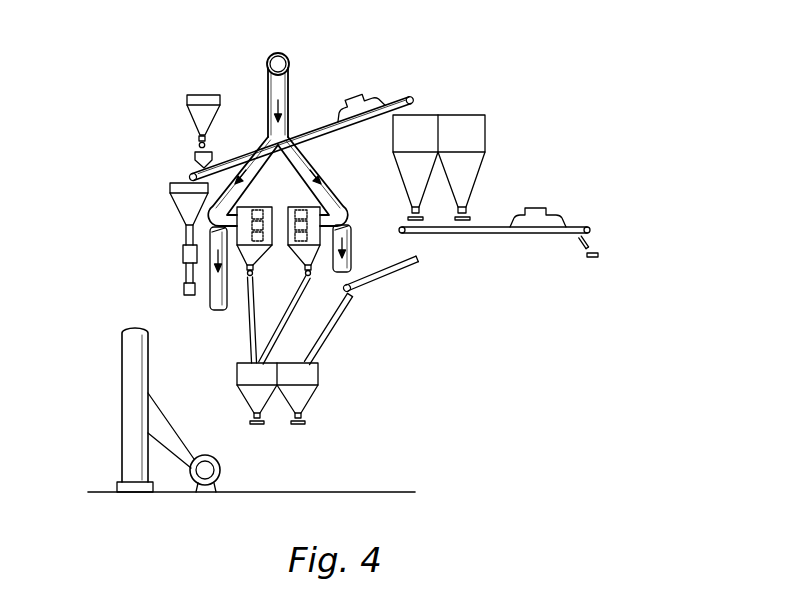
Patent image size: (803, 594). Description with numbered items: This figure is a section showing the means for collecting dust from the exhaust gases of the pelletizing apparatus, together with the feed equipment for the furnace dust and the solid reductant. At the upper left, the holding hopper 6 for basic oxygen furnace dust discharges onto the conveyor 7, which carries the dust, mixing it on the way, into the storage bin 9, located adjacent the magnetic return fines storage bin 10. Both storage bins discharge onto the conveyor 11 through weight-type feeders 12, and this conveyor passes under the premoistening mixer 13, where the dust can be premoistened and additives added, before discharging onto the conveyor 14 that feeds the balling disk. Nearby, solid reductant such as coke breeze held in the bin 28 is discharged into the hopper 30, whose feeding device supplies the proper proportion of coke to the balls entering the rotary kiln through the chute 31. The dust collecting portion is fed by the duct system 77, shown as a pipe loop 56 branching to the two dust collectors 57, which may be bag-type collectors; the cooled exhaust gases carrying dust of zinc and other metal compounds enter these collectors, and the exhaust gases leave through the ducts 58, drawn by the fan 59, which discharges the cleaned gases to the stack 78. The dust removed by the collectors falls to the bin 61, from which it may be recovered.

The holding hopper 6 is at (190, 114).
The conveyor 7 is at (299, 130).
The storage bin 9 is at (400, 139).
The return fines storage bin 10 is at (481, 131).
The conveyor 11 is at (487, 225).
The weight-type feeders 12 is at (457, 213).
The premoistening mixer 13 is at (553, 221).
The conveyor 14 is at (592, 259).
The bin 28 is at (181, 203).
The hopper 30 is at (183, 254).
The chute 31 is at (184, 290).
The pipe loop 56 is at (289, 80).
The dust collectors 57 is at (299, 208).
The ducts 58 is at (216, 309).
The fan 59 is at (220, 461).
The bin 61 is at (241, 373).
The duct system 77 is at (229, 175).
The stack 78 is at (133, 360).